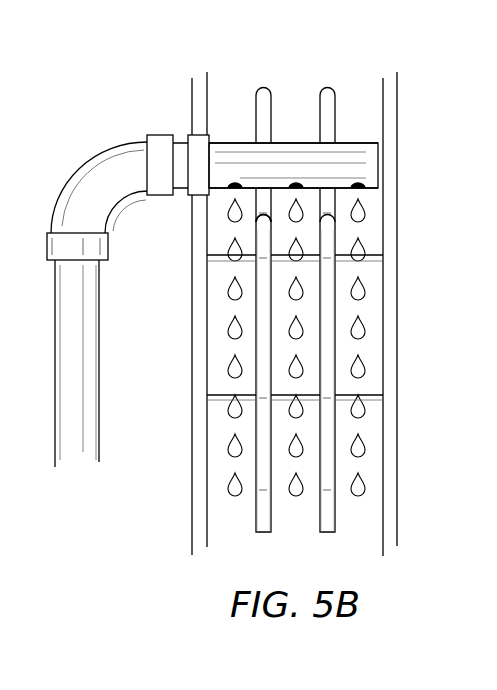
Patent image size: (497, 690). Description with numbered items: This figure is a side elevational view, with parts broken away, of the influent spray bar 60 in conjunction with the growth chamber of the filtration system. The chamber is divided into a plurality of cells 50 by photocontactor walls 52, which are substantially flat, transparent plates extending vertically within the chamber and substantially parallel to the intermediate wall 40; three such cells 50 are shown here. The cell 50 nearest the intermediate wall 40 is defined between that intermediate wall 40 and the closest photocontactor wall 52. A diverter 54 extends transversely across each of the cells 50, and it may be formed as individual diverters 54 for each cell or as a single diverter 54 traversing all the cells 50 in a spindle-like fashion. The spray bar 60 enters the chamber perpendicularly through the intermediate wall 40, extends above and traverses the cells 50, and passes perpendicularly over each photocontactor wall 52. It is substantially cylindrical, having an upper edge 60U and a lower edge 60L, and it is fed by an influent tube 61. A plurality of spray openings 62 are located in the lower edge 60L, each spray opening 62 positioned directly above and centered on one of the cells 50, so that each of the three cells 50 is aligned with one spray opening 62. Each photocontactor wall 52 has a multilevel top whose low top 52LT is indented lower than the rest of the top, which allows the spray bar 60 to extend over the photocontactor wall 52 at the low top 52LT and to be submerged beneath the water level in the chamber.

The intermediate wall 40 is at (192, 342).
The cells 50 is at (235, 517).
The photocontactor walls 52 is at (334, 283).
The low top 52LT is at (263, 210).
The diverter 54 is at (372, 403).
The influent spray bar 60 is at (348, 143).
The upper edge 60U is at (296, 143).
The lower edge 60L is at (376, 189).
The influent tube 61 is at (55, 332).
The spray openings 62 is at (355, 186).